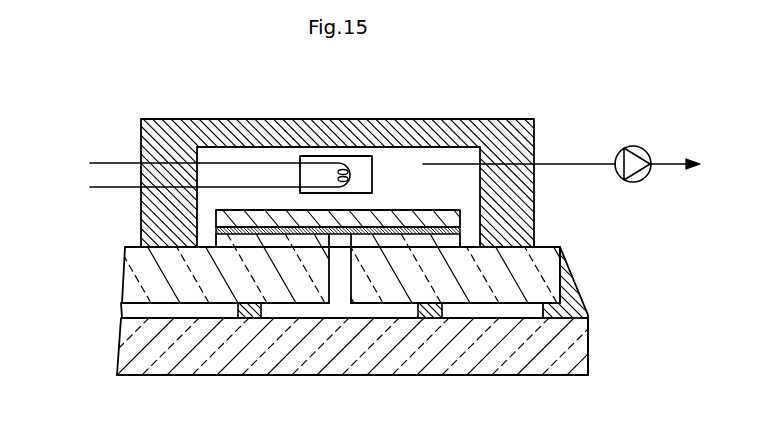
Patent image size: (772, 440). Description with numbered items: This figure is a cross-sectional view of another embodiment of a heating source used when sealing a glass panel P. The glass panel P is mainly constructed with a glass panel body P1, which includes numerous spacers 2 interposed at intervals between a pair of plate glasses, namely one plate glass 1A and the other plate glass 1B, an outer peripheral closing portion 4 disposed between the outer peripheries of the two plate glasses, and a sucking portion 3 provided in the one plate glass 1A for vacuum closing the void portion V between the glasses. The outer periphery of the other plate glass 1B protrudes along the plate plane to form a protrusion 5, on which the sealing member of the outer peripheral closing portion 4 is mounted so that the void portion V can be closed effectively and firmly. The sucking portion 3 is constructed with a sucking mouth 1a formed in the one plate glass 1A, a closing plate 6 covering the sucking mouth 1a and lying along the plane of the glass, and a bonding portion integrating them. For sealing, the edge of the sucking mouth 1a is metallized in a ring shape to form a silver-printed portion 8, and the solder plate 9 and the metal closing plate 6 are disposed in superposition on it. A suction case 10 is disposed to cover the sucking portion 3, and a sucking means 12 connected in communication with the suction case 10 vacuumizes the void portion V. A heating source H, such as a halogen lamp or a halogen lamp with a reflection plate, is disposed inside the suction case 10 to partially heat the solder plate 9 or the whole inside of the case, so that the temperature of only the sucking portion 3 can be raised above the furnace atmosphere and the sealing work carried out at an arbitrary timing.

The suction case 10 is at (142, 132).
The heating source H is at (349, 156).
The sucking portion 3 is at (402, 196).
The sucking means 12 is at (629, 147).
The solder plate 9 is at (462, 225).
The silver-printed portion 8 is at (462, 232).
The closing plate 6 is at (227, 218).
The one plate glass 1A is at (128, 277).
The sucking mouth 1a is at (341, 268).
The outer peripheral closing portion 4 is at (583, 293).
The other plate glass 1B is at (148, 333).
The protrusion 5 is at (586, 353).
The void portion V is at (306, 311).
The spacers 2 is at (418, 308).
The glass panel body P1 is at (466, 379).
The glass panel P is at (598, 391).